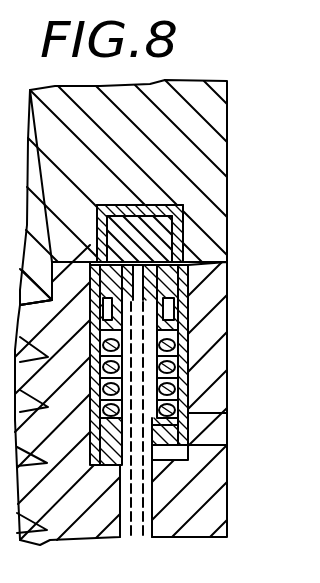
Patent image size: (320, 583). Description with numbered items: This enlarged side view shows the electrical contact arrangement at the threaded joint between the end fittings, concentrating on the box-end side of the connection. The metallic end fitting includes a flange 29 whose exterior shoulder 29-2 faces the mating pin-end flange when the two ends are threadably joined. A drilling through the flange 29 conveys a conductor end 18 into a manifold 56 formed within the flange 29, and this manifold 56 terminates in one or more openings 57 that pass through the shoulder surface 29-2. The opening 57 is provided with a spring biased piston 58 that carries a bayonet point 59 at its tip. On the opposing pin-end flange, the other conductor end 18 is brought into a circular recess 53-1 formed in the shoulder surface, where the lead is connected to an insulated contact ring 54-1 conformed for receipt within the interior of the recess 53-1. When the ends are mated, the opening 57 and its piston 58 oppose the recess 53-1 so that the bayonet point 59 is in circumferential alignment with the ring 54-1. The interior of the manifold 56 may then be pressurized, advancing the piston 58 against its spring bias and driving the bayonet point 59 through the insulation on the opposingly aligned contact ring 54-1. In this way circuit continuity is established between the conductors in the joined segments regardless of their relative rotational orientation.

The circular recess 53-1 is at (170, 205).
The insulated ring 54-1 is at (168, 232).
The bayonet point 59 is at (197, 256).
The shoulder 29-2 is at (205, 261).
The spring biased piston 58 is at (163, 295).
The manifold 56 is at (190, 352).
The opening 57 is at (188, 414).
The conductor end 18 is at (205, 445).
The flange 29 is at (227, 482).